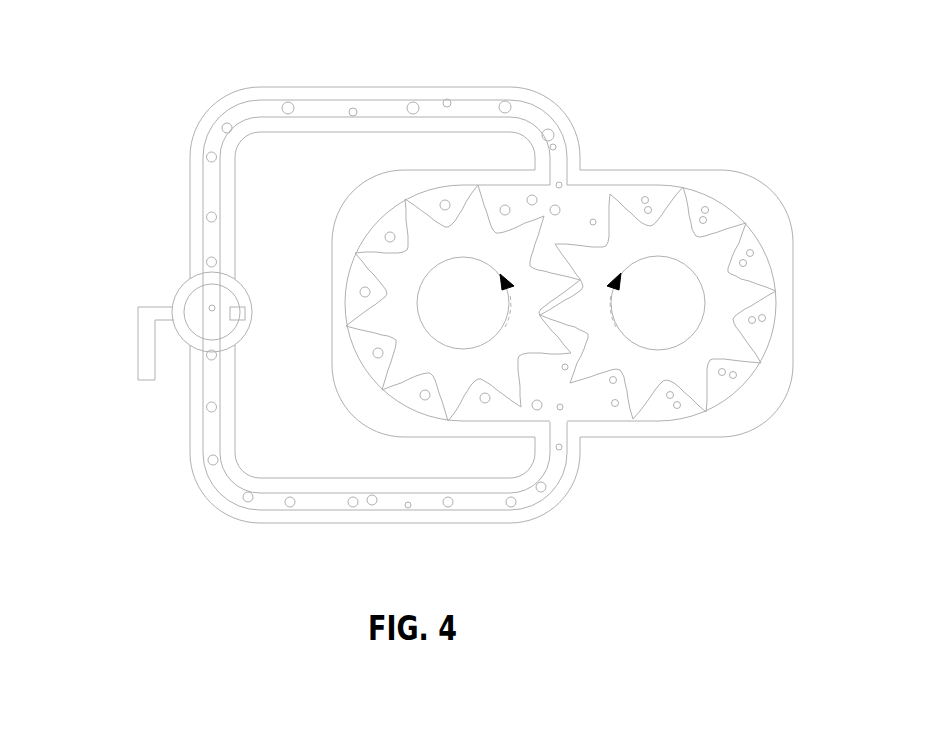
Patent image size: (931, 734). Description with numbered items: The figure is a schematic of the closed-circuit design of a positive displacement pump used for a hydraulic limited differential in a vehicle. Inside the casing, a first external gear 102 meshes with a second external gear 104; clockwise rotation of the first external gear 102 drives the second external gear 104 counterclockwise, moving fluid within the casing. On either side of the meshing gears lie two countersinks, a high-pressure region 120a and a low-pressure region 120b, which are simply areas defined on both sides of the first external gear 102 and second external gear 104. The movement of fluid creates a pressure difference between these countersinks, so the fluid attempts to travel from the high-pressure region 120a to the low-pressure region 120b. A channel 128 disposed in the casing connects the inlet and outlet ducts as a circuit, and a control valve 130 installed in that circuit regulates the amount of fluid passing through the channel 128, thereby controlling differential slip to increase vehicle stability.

The channel 128 is at (388, 87).
The control valve 130 is at (138, 350).
The first external gear 102 is at (358, 253).
The second external gear 104 is at (638, 197).
The countersink (low-pressure region) 120b is at (575, 205).
The countersink (high-pressure region) 120a is at (575, 400).